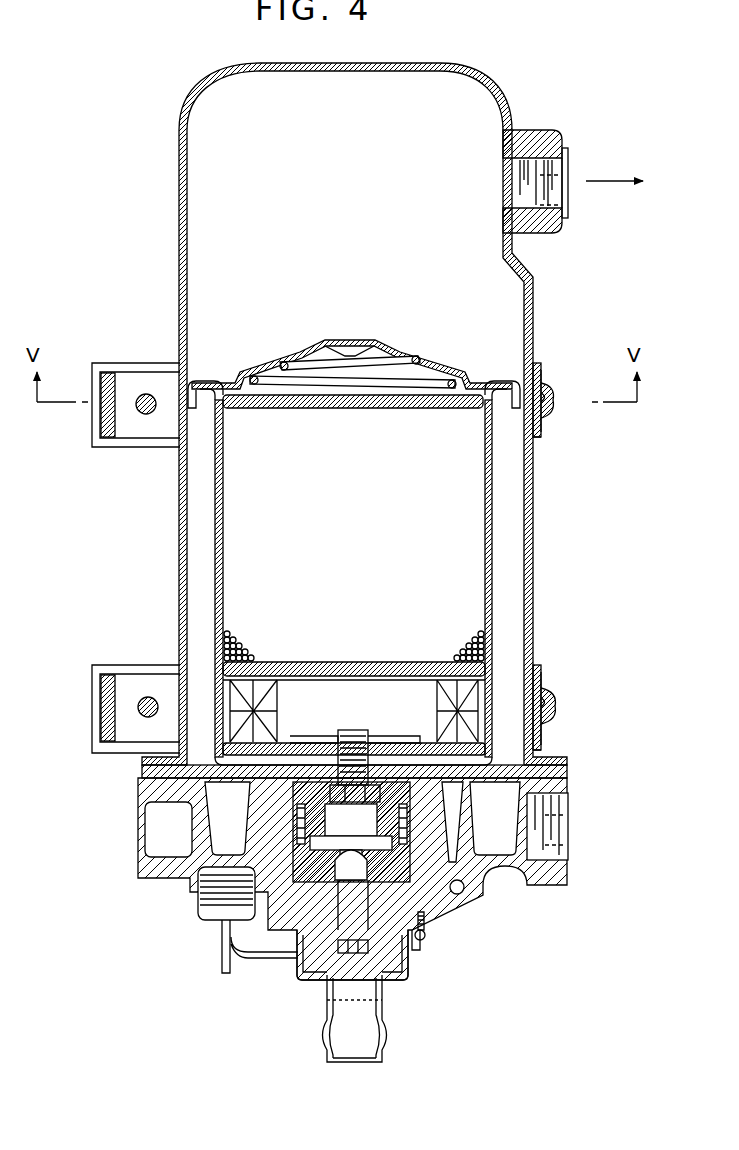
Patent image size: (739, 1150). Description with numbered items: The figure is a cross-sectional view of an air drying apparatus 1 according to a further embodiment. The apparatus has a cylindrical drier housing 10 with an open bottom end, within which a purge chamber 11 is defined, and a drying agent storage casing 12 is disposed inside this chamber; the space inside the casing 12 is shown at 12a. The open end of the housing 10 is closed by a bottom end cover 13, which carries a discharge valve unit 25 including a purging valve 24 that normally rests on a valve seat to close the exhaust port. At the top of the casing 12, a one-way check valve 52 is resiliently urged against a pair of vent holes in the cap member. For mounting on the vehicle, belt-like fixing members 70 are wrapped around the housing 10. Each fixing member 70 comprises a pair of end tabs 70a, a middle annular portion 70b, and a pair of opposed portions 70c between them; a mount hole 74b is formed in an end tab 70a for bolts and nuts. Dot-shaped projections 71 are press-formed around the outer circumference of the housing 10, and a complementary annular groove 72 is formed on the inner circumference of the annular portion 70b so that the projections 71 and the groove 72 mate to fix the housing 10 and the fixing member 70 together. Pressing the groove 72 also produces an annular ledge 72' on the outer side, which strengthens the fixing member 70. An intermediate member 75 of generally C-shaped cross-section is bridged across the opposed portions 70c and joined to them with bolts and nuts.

The air drying apparatus 1 is at (488, 74).
The drier housing 10 is at (534, 322).
The purge chamber 11 is at (497, 262).
The drying agent storage casing 12 is at (387, 573).
The inner chamber 12a is at (470, 483).
The bottom end cover 13 is at (470, 880).
The purging valve 24 is at (325, 940).
The discharge valve unit 25 is at (232, 710).
The one-way check valve 52 is at (350, 355).
The belt-like fixing member 70 is at (548, 438).
The end tabs 70a is at (95, 365).
The annular portion 70b is at (544, 420).
The opposed portions 70c is at (138, 370).
The projections 71 is at (541, 388).
The annular groove 72 is at (572, 556).
The annular ledge 72' is at (577, 536).
The mount hole 74b is at (100, 425).
The intermediate member 75 is at (112, 440).